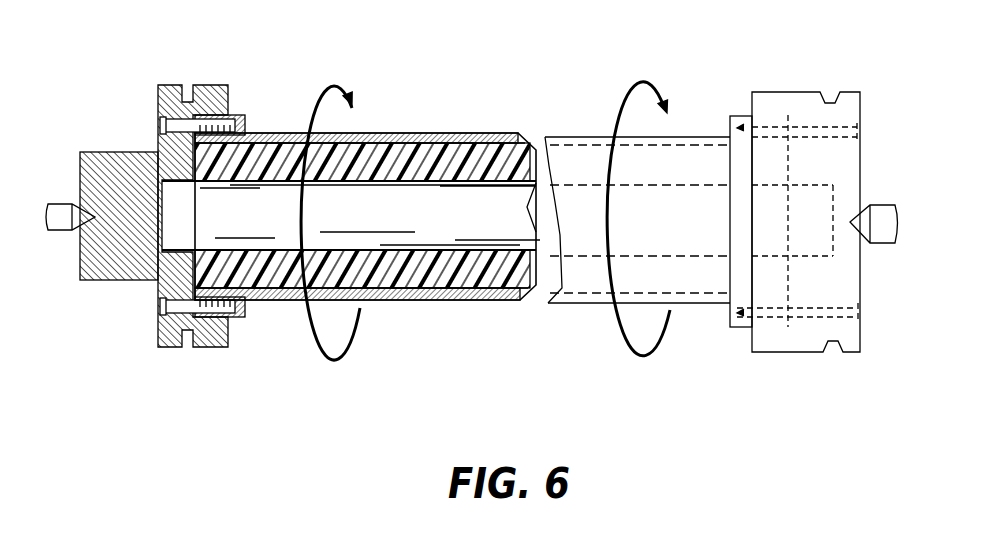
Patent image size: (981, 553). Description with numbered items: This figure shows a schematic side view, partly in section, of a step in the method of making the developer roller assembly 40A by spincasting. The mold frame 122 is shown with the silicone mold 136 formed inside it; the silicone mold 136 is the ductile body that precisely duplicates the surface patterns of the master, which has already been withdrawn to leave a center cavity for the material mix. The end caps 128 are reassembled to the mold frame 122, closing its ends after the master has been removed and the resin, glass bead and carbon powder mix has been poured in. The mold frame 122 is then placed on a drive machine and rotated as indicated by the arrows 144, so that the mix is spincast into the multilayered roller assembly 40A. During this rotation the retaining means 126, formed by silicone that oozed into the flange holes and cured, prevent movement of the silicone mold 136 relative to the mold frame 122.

The mold frame 122 is at (281, 128).
The retaining means 126 is at (387, 140).
The silicone mold 136 is at (463, 142).
The roller assembly 40A is at (407, 226).
The arrows 144 is at (335, 360).
The end caps 128 is at (117, 272).